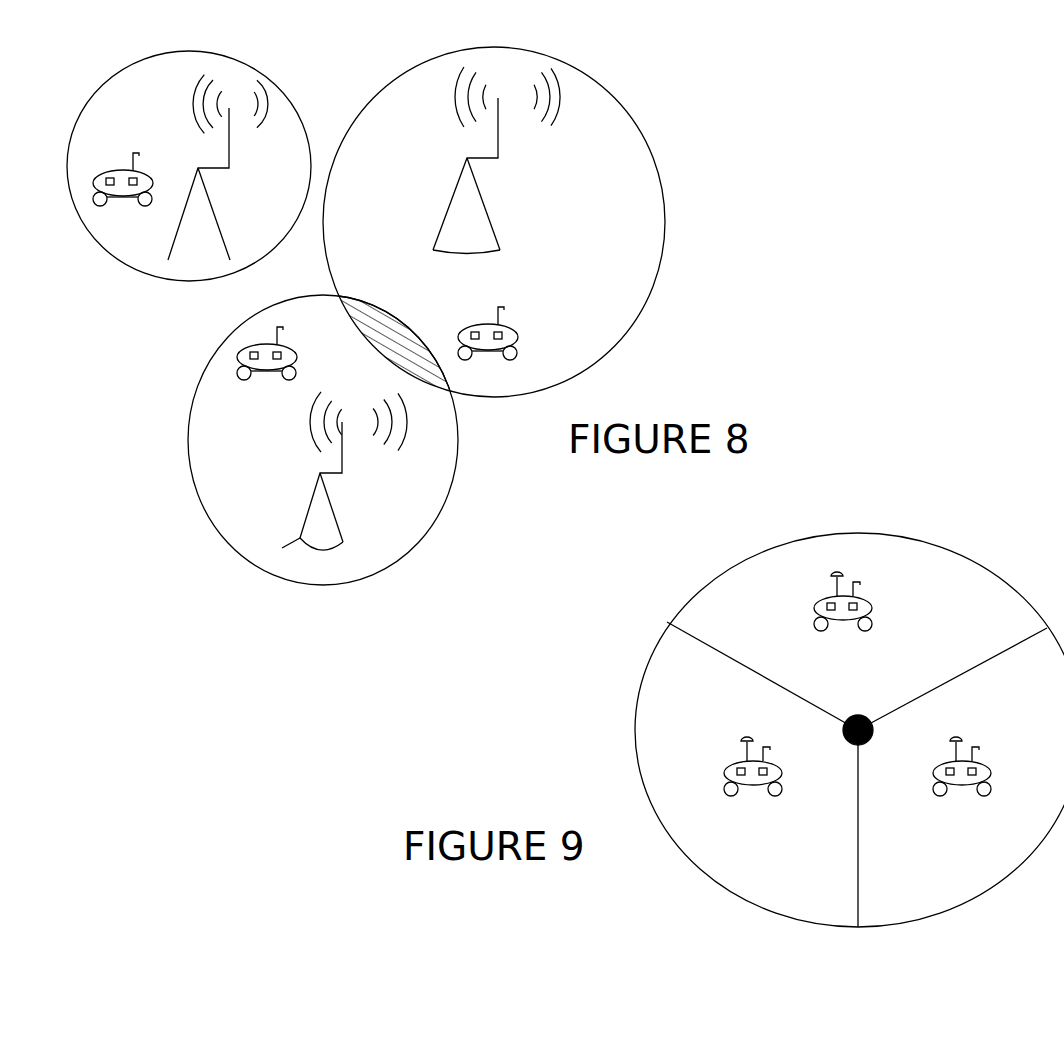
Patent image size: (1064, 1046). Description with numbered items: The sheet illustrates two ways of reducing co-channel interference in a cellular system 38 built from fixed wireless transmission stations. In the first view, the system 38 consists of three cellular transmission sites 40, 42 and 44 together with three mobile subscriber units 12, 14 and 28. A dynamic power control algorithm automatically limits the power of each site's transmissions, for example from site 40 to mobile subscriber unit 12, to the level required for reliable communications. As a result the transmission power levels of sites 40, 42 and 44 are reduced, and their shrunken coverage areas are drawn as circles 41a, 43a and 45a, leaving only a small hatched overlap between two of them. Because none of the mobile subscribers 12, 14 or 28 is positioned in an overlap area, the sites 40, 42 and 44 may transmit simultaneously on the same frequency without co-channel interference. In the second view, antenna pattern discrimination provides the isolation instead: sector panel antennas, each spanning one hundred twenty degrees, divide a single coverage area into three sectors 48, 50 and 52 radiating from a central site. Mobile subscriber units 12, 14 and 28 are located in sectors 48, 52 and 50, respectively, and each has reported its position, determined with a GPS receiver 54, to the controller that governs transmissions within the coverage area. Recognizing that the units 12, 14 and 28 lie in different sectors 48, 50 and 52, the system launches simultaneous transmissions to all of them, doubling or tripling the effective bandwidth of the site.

In FIG. 8, the mobile subscriber unit 12 is at (125, 198).
In FIG. 9, the mobile subscriber unit 12 is at (845, 628).
In FIG. 8, the mobile subscriber unit 14 is at (509, 325).
In FIG. 9, the mobile subscriber unit 14 is at (757, 793).
In FIG. 8, the mobile subscriber unit 28 is at (270, 373).
In FIG. 9, the mobile subscriber unit 28 is at (965, 793).
In FIG. 8, the cellular system 38 is at (655, 88).
In FIG. 8, the cellular transmission site 40 is at (205, 248).
In FIG. 8, the reduced coverage area circle 41a is at (100, 85).
In FIG. 8, the cellular transmission site 42 is at (488, 241).
In FIG. 8, the reduced coverage area circle 43a is at (655, 175).
In FIG. 8, the cellular transmission site 44 is at (331, 541).
In FIG. 8, the reduced coverage area circle 45a is at (438, 522).
In FIG. 9, the sector 48 is at (775, 621).
In FIG. 9, the sector 50 is at (1028, 725).
In FIG. 9, the sector 52 is at (708, 706).
In FIG. 9, the GPS receiver 54 is at (835, 592).